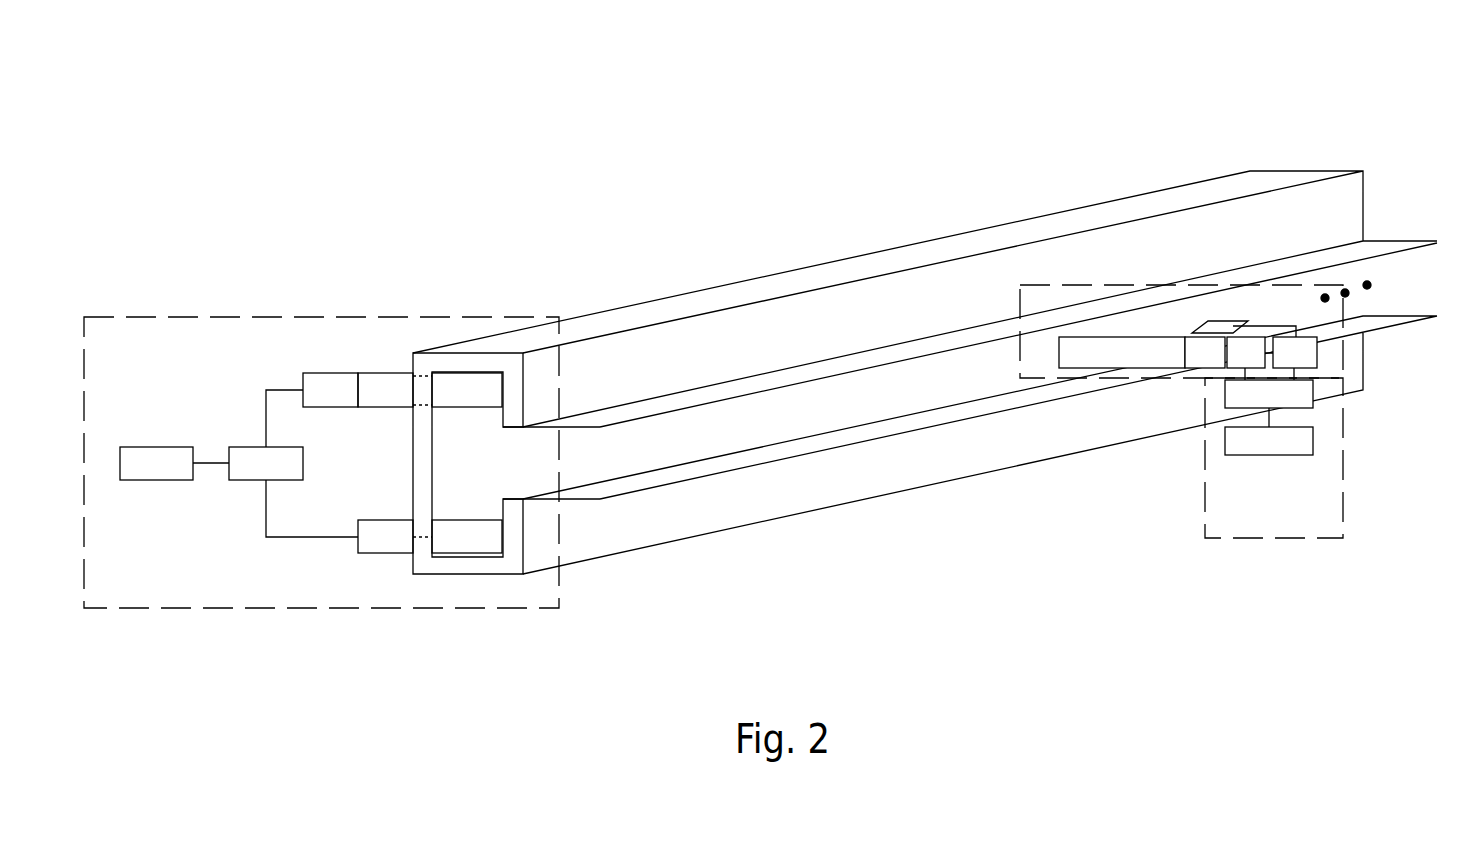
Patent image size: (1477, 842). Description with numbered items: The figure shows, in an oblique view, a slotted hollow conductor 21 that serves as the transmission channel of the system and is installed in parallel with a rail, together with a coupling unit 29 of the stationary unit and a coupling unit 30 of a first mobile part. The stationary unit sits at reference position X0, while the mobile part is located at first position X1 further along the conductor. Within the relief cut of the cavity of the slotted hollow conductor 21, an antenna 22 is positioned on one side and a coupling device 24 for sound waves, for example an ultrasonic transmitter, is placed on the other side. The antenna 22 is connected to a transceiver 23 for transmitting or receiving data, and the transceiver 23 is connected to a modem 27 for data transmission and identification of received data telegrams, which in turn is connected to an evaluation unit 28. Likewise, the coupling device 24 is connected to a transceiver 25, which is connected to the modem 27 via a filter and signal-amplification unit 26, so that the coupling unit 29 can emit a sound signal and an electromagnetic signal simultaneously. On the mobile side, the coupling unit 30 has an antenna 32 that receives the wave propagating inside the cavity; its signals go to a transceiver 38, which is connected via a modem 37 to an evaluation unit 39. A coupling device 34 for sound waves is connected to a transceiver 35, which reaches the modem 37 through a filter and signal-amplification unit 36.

The slotted hollow conductor 21 is at (862, 455).
The antenna 22 is at (479, 550).
The transceiver for electromagnetic waves 23 is at (398, 550).
The coupling device for sound waves 24 is at (479, 403).
The acoustic transceiver 25 is at (398, 403).
The filter and signal-amplification unit 26 is at (343, 403).
The modem for a data transmission and identification of received data telegrams 27 is at (279, 477).
The evaluation unit 28 is at (169, 477).
The coupling unit 29 is at (226, 312).
The coupling unit 30 is at (1345, 469).
The antenna 32 is at (1217, 318).
The coupling device for sound waves 34 is at (1134, 366).
The transceiver 35 is at (1217, 366).
The filter and signal-amplification unit 36 is at (1258, 366).
The modem for a data transmission and identification of received data telegrams 37 is at (1281, 407).
The transceiver 38 is at (1307, 366).
The evaluation unit 39 is at (1281, 454).
The reference position of stationary unit X0 is at (463, 340).
The first position X1 is at (1078, 205).